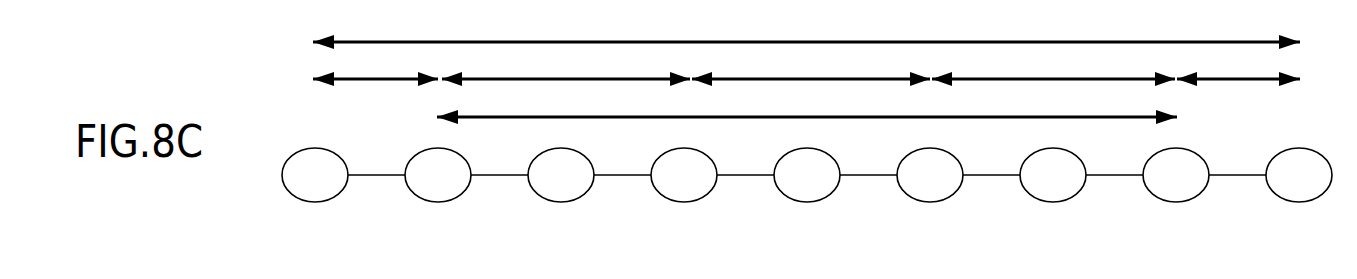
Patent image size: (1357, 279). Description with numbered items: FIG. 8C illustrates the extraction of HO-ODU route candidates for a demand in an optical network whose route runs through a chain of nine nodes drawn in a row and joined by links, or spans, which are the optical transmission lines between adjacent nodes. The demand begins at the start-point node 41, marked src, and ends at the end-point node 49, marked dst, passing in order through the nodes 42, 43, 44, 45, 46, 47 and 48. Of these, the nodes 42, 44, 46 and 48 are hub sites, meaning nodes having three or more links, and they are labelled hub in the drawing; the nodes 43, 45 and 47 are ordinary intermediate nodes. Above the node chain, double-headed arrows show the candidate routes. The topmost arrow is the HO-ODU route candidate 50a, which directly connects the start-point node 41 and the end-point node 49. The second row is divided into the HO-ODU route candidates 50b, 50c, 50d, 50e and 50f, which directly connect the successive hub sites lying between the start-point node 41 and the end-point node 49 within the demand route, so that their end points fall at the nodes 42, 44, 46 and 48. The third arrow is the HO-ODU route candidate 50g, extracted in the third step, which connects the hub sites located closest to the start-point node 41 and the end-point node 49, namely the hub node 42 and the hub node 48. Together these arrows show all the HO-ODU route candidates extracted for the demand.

The HO-ODU route candidate 50a is at (808, 41).
The HO-ODU route candidate 50b is at (380, 78).
The HO-ODU route candidate 50c is at (565, 78).
The HO-ODU route candidate 50d is at (808, 78).
The HO-ODU route candidate 50e is at (1055, 78).
The HO-ODU route candidate 50f is at (1208, 78).
The HO-ODU route candidate 50g is at (808, 116).
The start-point node 41 is at (313, 202).
The hub site node 42 is at (436, 202).
The node 43 is at (559, 202).
The hub site node 44 is at (682, 202).
The node 45 is at (805, 202).
The hub site node 46 is at (928, 202).
The node 47 is at (1051, 202).
The hub site node 48 is at (1174, 202).
The end-point node 49 is at (1297, 202).